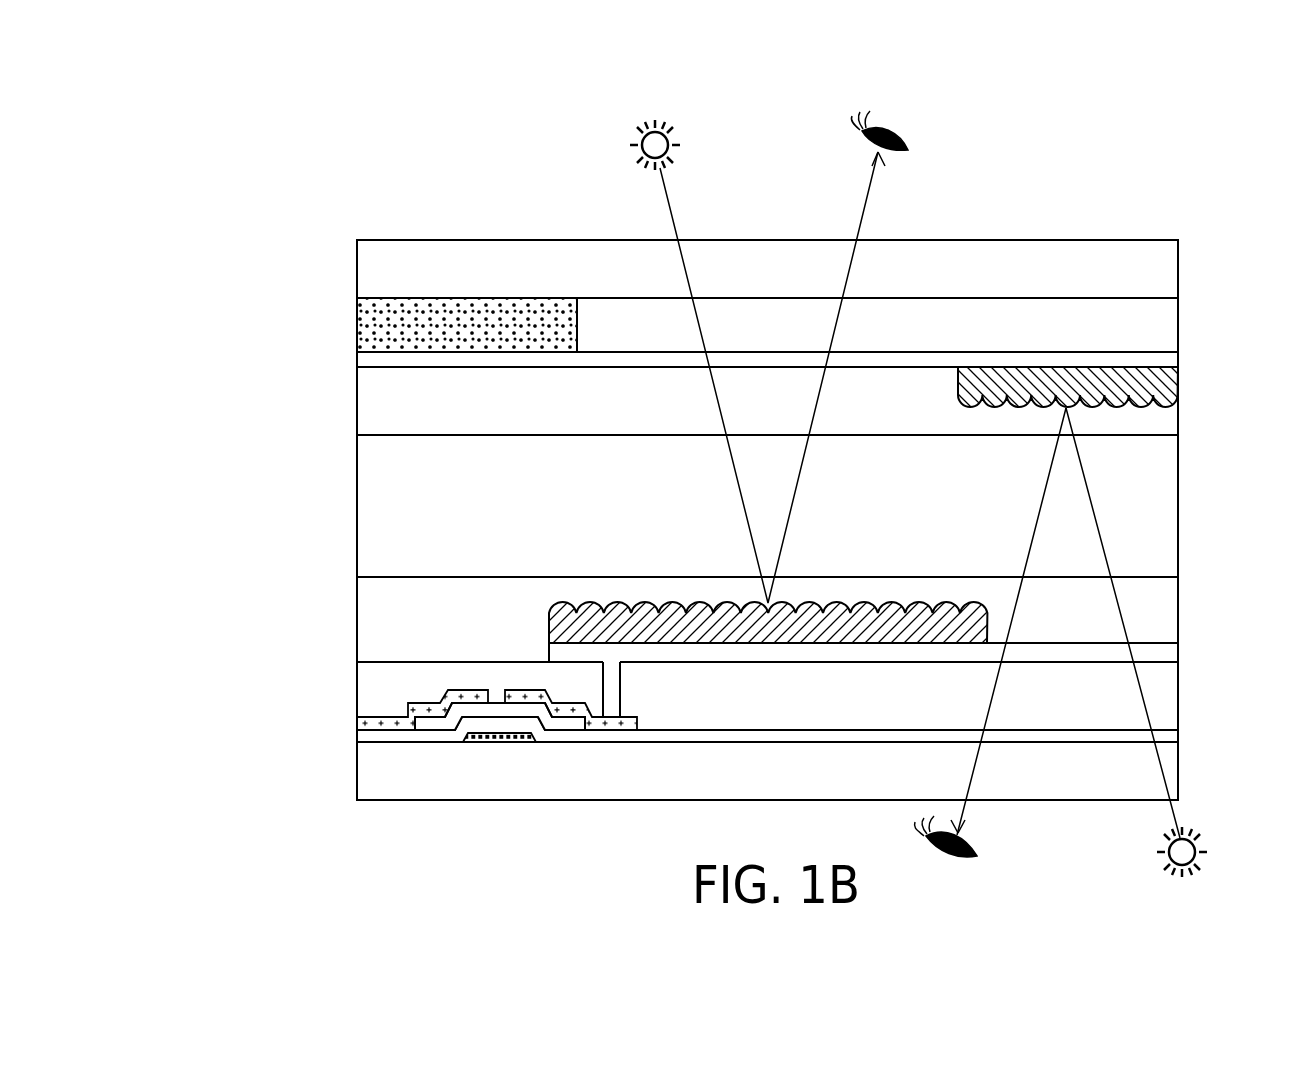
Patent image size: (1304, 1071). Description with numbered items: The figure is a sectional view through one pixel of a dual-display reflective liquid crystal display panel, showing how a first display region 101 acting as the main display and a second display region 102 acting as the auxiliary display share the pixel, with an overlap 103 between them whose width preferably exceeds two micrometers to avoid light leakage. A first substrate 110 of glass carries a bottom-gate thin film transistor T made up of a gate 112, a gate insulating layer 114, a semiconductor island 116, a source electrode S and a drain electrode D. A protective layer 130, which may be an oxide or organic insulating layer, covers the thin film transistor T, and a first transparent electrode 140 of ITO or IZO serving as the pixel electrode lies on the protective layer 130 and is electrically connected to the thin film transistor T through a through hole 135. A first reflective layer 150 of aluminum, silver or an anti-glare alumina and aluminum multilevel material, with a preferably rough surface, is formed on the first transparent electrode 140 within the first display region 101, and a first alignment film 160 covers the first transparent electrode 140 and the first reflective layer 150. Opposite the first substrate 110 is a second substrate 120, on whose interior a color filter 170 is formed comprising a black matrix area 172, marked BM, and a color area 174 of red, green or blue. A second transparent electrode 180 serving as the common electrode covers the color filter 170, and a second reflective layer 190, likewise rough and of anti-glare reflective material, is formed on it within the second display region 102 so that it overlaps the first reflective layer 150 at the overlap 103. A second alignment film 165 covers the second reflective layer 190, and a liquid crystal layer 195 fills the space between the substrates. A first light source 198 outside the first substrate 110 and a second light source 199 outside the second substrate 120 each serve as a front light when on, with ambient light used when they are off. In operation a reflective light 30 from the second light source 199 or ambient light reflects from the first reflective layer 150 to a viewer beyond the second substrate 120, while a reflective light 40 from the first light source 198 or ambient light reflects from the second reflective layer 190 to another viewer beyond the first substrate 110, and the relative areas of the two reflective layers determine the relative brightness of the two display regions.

The first display region 101 is at (973, 99).
The second display region 102 is at (1165, 136).
The overlap 103 is at (999, 216).
The second light source 199 is at (634, 141).
The reflective light 30 is at (670, 210).
The second substrate 120 is at (370, 275).
The color filter 170 is at (244, 307).
The black matrix area 172 is at (370, 329).
The black matrix BM is at (468, 331).
The color area 174 is at (650, 328).
The second transparent electrode 180 is at (1165, 359).
The second reflective layer 190 is at (1165, 386).
The second alignment film 165 is at (1165, 425).
The liquid crystal layer 195 is at (370, 516).
The first reflective layer 150 is at (565, 624).
The first alignment film 160 is at (1165, 614).
The first transparent electrode 140 is at (1165, 653).
The protective layer 130 is at (1165, 698).
The thin film transistor T is at (426, 698).
The gate insulating layer 114 is at (372, 738).
The first substrate 110 is at (372, 782).
The drain electrode D is at (405, 731).
The semiconductor island 116 is at (467, 720).
The gate 112 is at (520, 742).
The source electrode S is at (604, 731).
The through hole 135 is at (620, 688).
The reflective light 40 is at (1177, 810).
The first light source 198 is at (1196, 851).